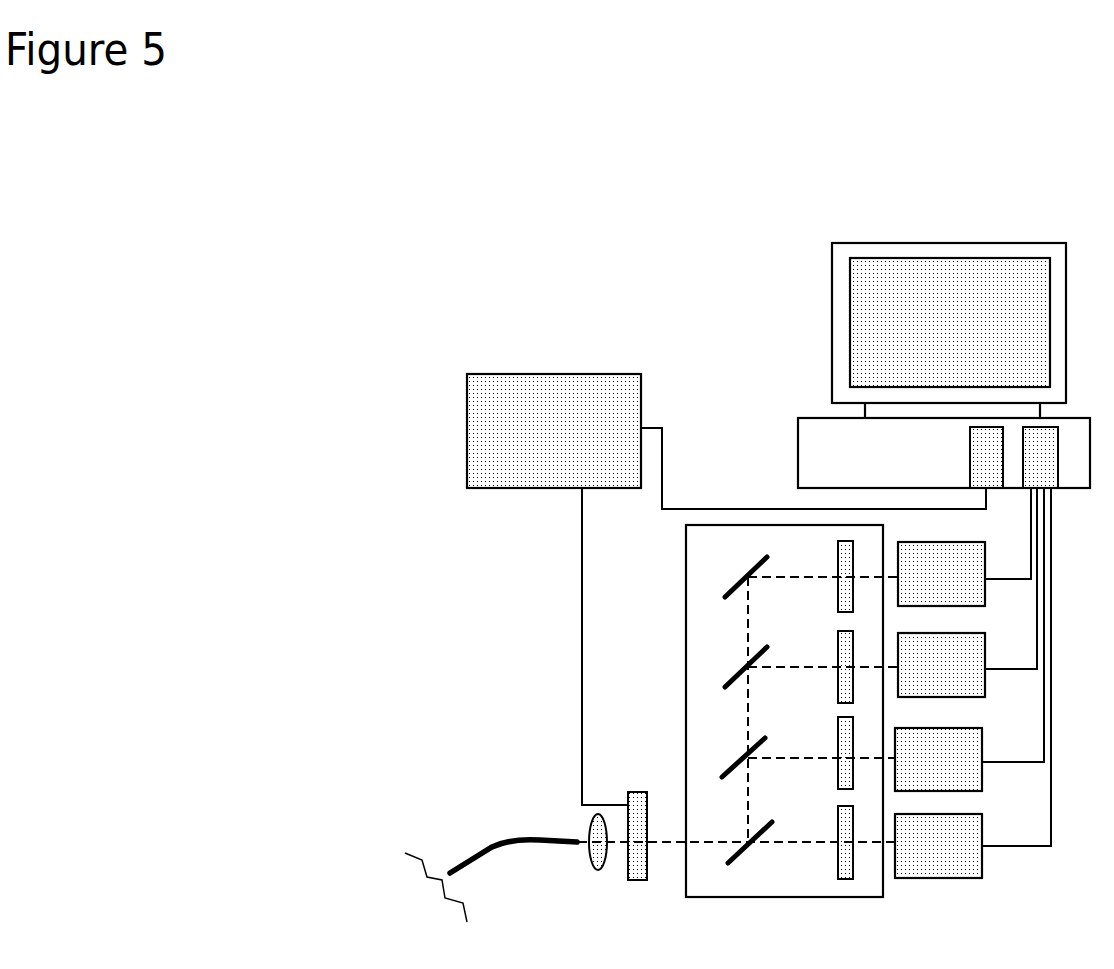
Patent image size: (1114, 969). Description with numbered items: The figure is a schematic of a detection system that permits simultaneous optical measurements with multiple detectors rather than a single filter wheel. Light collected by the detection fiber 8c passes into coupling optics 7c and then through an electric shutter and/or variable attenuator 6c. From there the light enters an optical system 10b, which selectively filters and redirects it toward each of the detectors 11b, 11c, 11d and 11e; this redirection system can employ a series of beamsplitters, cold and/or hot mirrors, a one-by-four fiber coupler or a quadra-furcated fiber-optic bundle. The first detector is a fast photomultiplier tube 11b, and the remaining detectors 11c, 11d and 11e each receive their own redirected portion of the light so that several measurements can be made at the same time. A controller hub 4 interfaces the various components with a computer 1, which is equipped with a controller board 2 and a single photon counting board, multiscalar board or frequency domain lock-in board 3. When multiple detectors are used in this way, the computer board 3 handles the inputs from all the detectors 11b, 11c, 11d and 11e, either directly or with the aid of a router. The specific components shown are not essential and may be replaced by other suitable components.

The computer 1 is at (941, 365).
The controller board 2 is at (822, 468).
The single photon counting board or multiscalar board or frequency domain lock-in bo 3 is at (1033, 636).
The controller hub 4 is at (554, 589).
The electric shutter and/or variable attenuator 6c is at (639, 856).
The coupling optics 7c is at (594, 867).
The fiber 8c is at (491, 863).
The optical system 10b is at (734, 699).
The fast photomultiplier tube 11b is at (938, 846).
The detector 11c is at (938, 759).
The detector 11d is at (941, 665).
The detector 11e is at (941, 574).